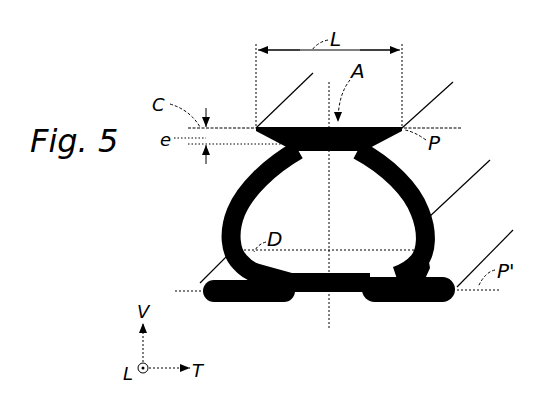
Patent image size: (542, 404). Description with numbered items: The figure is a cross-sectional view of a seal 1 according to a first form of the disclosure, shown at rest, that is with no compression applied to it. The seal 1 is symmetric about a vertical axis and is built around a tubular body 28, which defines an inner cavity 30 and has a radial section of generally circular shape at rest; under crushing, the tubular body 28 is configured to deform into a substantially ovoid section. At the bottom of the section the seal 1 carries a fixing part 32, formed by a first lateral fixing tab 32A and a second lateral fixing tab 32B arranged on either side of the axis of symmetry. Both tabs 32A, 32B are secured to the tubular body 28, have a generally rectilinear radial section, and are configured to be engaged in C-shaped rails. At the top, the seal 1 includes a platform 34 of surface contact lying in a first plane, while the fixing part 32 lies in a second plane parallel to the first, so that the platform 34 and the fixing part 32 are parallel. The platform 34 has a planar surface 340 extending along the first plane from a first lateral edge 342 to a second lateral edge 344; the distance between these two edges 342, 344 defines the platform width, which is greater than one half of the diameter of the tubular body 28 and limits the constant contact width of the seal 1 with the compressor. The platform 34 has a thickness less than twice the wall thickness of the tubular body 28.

The seal 1 is at (459, 172).
The tubular body 28 is at (435, 244).
The inner cavity 30 is at (388, 210).
The fixing part 32 is at (379, 310).
The first lateral fixing tab 32A is at (250, 303).
The second lateral fixing tab 32B is at (410, 302).
The platform 34 is at (342, 126).
The planar surface 340 is at (402, 127).
The first lateral edge 342 is at (256, 127).
The second lateral edge 344 is at (408, 128).